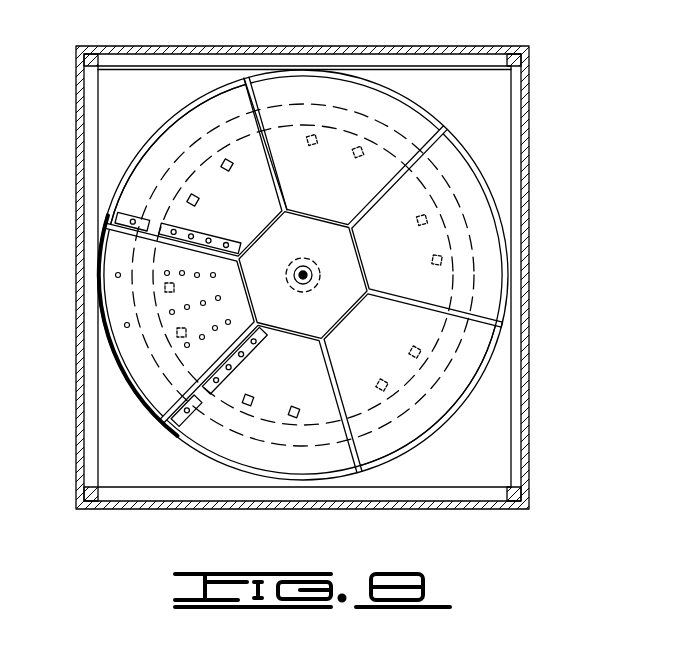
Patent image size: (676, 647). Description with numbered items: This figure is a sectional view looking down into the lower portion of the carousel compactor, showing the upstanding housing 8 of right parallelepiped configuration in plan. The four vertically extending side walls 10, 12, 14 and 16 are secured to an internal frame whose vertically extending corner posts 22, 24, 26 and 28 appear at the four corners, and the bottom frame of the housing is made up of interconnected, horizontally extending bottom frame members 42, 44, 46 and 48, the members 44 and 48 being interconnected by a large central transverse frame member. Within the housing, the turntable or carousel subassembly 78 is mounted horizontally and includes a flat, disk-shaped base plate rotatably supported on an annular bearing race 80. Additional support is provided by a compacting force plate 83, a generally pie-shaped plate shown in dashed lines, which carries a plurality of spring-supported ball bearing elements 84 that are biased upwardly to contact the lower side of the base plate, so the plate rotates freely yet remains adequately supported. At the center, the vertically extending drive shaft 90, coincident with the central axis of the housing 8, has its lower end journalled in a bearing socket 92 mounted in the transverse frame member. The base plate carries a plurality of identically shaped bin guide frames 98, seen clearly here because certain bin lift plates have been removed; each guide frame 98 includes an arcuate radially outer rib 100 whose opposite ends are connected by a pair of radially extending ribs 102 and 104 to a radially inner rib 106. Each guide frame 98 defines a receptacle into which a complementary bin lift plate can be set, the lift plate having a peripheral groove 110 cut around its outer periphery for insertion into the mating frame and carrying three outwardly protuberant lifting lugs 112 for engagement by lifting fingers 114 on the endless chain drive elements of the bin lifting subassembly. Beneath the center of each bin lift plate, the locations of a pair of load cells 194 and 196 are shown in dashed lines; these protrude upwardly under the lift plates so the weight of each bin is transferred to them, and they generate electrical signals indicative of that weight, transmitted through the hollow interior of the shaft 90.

The housing 8 is at (70, 112).
The side wall 10 is at (78, 196).
The side wall 12 is at (370, 47).
The side wall 14 is at (529, 225).
The side wall 16 is at (410, 507).
The corner post 22 is at (89, 50).
The corner post 24 is at (520, 50).
The corner post 26 is at (520, 503).
The corner post 28 is at (90, 503).
The bottom frame member 42 is at (180, 497).
The bottom frame member 44 is at (90, 402).
The bottom frame member 46 is at (183, 48).
The bottom frame member 48 is at (516, 112).
The carousel subassembly 78 is at (307, 275).
The annular bearing race 80 is at (393, 89).
The compacting force plate 83 is at (130, 214).
The spring-supported ball bearing elements 84 is at (145, 370).
The drive shaft 90 is at (314, 273).
The bearing socket 92 is at (286, 262).
The bin guide frames 98 is at (283, 157).
The radially outer rib 100 is at (486, 180).
The radially extending rib 102 is at (368, 458).
The radially extending rib 104 is at (480, 328).
The radially inner rib 106 is at (265, 233).
The peripheral groove 110 is at (178, 113).
The lifting lugs 112 is at (240, 91).
The lifting fingers 114 is at (205, 233).
The load cell 194 is at (312, 128).
The load cell 196 is at (355, 145).